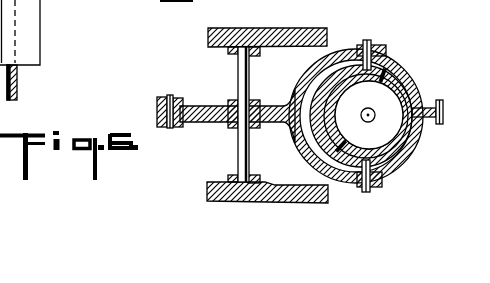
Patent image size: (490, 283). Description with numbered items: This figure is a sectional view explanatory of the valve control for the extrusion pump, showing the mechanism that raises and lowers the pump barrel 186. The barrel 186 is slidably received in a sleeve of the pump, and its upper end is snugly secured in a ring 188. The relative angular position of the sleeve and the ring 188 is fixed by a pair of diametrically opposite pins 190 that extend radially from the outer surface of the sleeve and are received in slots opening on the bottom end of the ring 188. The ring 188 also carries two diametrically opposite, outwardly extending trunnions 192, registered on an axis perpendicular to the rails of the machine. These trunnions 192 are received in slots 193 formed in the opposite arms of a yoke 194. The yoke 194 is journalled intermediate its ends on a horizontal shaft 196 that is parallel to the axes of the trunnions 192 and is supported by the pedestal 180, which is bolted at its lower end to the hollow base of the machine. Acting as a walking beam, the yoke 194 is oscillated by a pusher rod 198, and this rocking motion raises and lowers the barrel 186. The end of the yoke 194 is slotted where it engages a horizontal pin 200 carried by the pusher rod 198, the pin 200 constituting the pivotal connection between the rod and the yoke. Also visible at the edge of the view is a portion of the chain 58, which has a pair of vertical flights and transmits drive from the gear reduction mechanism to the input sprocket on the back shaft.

The chain 58 is at (19, 87).
The pedestal 180 is at (297, 27).
The pump barrel 186 is at (396, 146).
The ring 188 is at (408, 78).
The pins 190 is at (384, 78).
The trunnions 192 is at (372, 46).
The slots 193 is at (365, 39).
The yoke 194 is at (300, 77).
The horizontal shaft 196 is at (243, 72).
The pusher rod 198 is at (163, 96).
The horizontal pin 200 is at (171, 130).